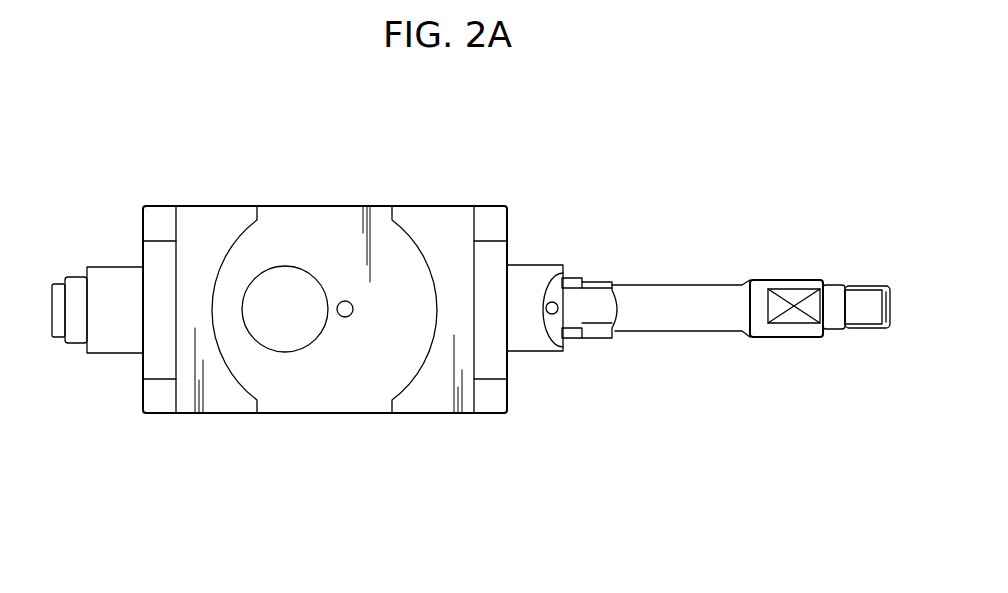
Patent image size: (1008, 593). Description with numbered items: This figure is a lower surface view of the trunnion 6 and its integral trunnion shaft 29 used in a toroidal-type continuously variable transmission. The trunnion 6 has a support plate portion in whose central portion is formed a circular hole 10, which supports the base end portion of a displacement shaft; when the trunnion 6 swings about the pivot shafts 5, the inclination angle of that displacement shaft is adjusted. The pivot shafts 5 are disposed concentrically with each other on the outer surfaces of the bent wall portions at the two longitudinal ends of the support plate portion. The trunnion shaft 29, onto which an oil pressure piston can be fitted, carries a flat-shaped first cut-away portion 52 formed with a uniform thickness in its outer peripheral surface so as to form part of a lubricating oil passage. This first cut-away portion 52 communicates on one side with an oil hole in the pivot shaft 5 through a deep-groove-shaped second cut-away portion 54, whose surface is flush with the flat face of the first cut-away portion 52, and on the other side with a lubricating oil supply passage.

The pivot shaft 5 is at (104, 282).
The trunnion 6 is at (433, 202).
The circular hole 10 is at (286, 280).
The trunnion shaft 29 is at (783, 279).
The first cut-away portion 52 is at (680, 323).
The second cut-away portion 54 is at (598, 303).